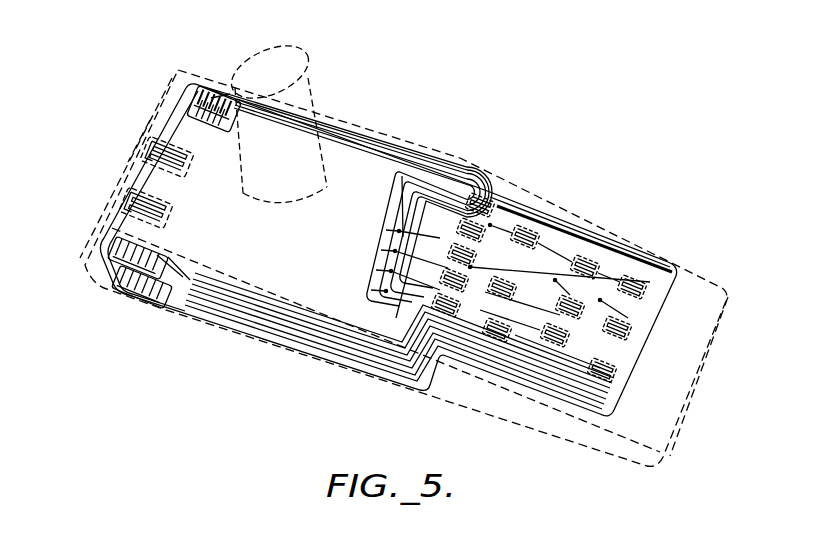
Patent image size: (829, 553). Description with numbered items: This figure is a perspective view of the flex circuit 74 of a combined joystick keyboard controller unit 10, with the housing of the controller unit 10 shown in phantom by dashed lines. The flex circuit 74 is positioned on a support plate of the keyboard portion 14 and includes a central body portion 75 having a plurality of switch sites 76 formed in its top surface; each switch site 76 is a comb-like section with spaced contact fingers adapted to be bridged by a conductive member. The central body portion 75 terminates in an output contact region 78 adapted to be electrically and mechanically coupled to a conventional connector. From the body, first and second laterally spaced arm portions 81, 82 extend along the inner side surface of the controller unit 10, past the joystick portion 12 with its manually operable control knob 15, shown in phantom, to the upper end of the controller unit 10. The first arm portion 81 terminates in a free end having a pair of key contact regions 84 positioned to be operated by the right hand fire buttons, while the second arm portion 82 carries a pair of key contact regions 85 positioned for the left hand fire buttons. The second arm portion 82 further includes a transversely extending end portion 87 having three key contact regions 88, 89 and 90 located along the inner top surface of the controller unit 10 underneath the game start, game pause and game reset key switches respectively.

The combined joystick keyboard controller unit 10 is at (541, 434).
The joystick portion 12 is at (158, 362).
The keyboard portion 14 is at (633, 173).
The control knob 15 is at (292, 62).
The flex circuit 74 is at (454, 160).
The central body portion 75 is at (560, 257).
The switch sites 76 is at (520, 350).
The output contact region 78 is at (402, 176).
The first arm portion 81 is at (326, 122).
The second arm portion 82 is at (250, 326).
The key contact regions 84 is at (211, 98).
The key contact regions 85 is at (140, 306).
The transversely extending end portion 87 is at (128, 175).
The key contact region 88 is at (145, 205).
The key contact region 89 is at (170, 158).
The key contact region 90 is at (196, 108).